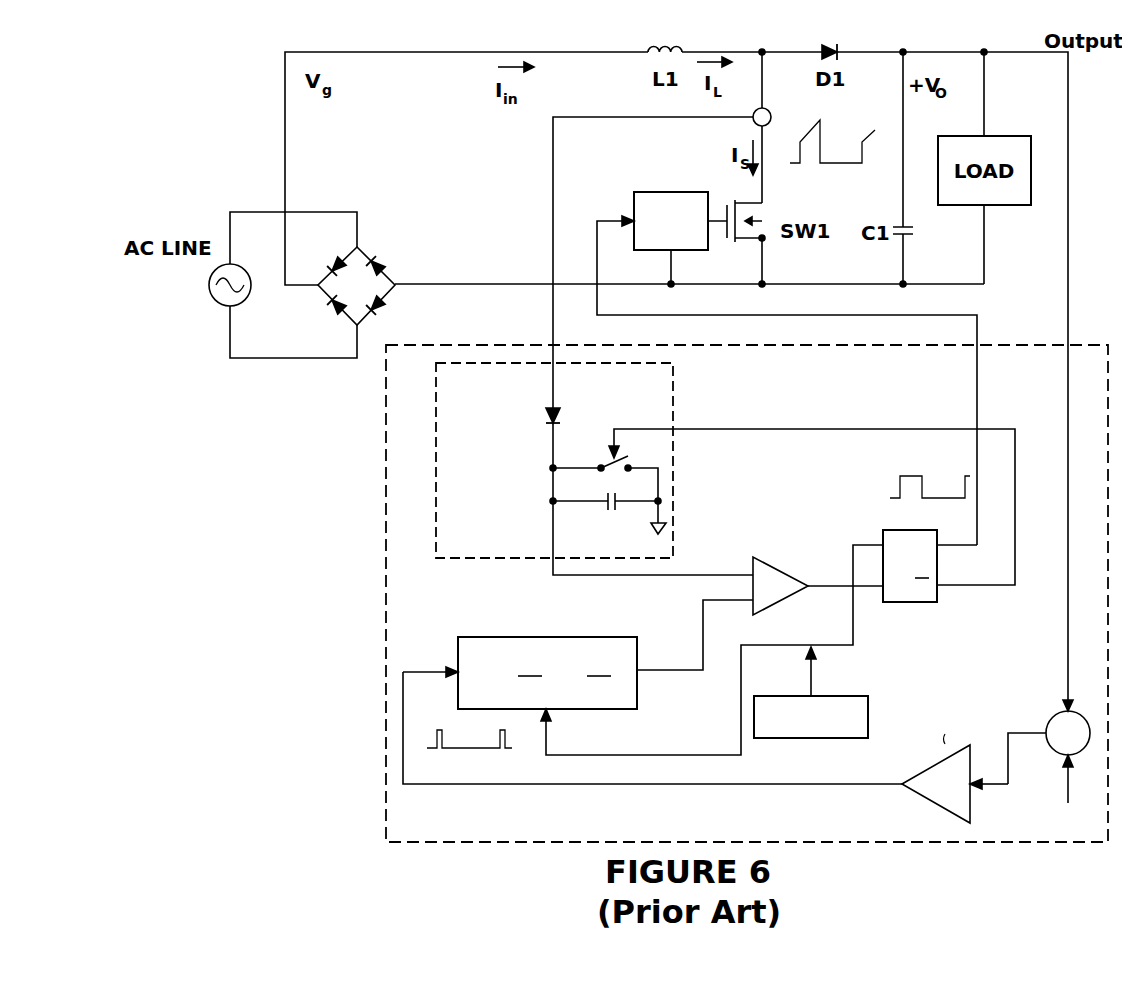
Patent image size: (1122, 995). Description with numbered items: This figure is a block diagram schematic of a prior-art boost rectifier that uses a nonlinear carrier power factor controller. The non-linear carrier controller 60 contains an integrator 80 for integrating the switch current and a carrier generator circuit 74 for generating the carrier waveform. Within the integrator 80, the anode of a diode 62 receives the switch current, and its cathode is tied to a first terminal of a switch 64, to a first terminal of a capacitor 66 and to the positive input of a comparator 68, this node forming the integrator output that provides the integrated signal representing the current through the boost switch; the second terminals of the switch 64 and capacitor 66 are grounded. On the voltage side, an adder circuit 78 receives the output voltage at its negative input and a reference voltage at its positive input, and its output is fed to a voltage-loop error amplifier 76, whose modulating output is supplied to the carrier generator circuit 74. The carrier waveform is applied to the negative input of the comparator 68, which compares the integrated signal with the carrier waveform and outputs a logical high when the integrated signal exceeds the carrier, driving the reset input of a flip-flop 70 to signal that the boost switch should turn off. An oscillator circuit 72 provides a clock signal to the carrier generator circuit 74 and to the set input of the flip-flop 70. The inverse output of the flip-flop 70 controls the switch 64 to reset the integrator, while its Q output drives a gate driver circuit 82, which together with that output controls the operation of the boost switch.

The non-linear carrier controller 60 is at (375, 500).
The diode 62 is at (580, 403).
The switch 64 is at (601, 459).
The capacitor 66 is at (607, 515).
The comparator 68 is at (795, 573).
The flip-flop 70 is at (872, 510).
The oscillator circuit 72 is at (844, 690).
The carrier generator circuit 74 is at (645, 705).
The voltage-loop error amplifier 76 is at (915, 800).
The adder circuit 78 is at (1048, 760).
The integrator 80 is at (593, 469).
The gate driver circuit 82 is at (654, 183).